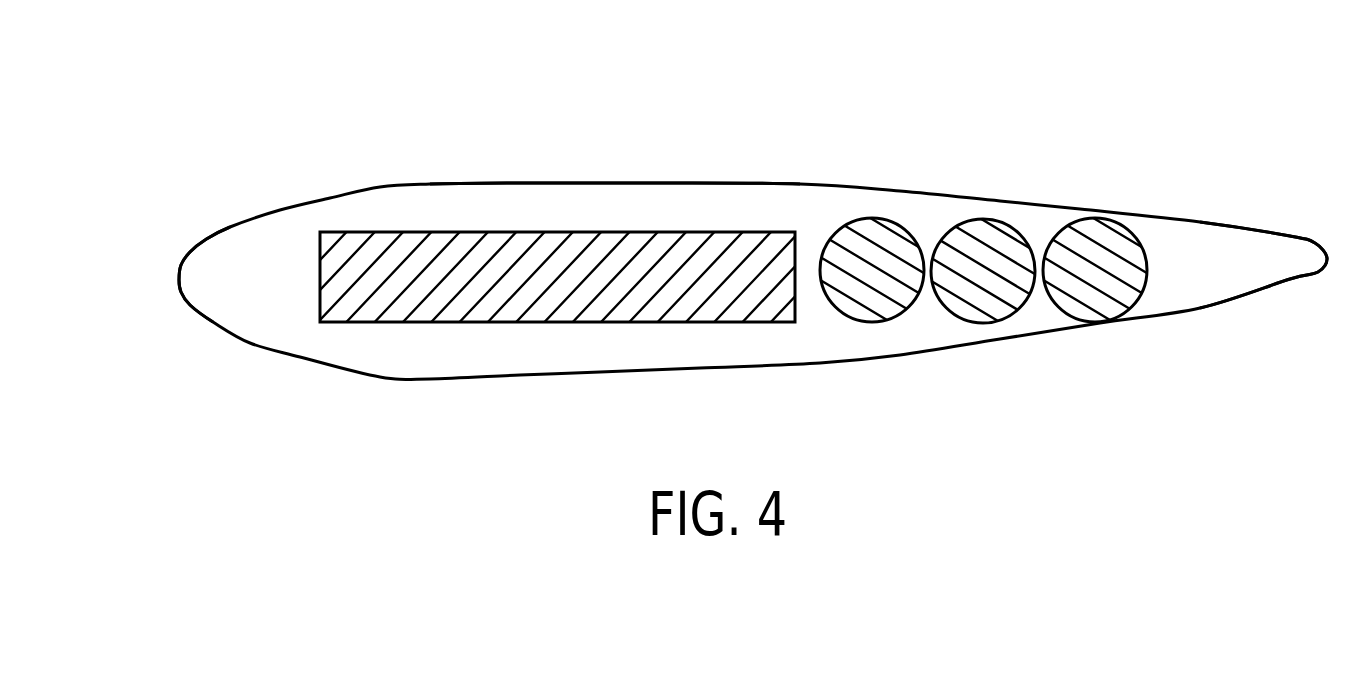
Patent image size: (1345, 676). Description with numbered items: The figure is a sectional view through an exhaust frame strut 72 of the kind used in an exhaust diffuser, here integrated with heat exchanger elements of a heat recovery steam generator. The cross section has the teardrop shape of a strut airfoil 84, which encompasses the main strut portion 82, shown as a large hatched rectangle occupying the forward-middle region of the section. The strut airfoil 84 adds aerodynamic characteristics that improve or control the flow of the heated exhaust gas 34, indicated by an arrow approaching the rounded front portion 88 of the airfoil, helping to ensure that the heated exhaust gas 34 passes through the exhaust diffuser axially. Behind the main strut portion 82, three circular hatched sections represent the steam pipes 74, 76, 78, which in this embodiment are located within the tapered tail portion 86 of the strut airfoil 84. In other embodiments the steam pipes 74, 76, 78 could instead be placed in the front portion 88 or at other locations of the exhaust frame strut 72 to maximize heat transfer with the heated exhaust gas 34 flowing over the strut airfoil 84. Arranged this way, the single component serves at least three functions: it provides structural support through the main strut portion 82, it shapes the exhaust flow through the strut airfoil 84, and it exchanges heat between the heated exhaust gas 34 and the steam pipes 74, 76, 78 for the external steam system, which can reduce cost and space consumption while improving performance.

The exhaust frame strut 72 is at (214, 142).
The heated exhaust gas 34 is at (133, 273).
The front portion 88 is at (213, 320).
The strut airfoil 84 is at (555, 183).
The tail portion 86 is at (1237, 293).
The main strut portion 82 is at (675, 230).
The steam pipe 74 is at (912, 232).
The steam pipe 76 is at (980, 220).
The steam pipe 78 is at (1061, 230).